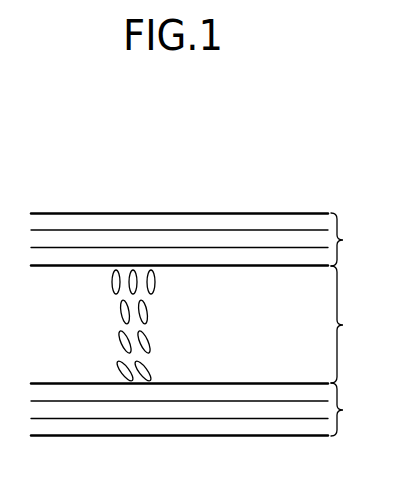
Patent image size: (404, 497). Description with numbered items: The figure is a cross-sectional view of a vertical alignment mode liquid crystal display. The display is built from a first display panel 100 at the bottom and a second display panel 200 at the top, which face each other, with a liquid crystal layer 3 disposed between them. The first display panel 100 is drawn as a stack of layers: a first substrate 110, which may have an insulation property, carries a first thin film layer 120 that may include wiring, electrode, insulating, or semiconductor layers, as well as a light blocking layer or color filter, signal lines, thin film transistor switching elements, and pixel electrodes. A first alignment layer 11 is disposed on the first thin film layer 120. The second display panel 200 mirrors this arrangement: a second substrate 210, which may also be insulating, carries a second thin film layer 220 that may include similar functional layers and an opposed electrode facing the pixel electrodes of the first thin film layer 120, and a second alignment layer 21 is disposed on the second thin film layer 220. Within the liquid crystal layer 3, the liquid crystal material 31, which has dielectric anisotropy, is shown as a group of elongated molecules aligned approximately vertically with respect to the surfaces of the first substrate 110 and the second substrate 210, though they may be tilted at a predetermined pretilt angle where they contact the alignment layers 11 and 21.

The second display panel 200 is at (204, 222).
The second substrate 210 is at (132, 225).
The second thin film layer 220 is at (184, 243).
The second alignment layer 21 is at (253, 258).
The liquid crystal layer 3 is at (236, 324).
The liquid crystal material 31 is at (148, 312).
The first display panel 100 is at (204, 431).
The first substrate 110 is at (130, 428).
The first thin film layer 120 is at (195, 410).
The first alignment layer 11 is at (253, 393).